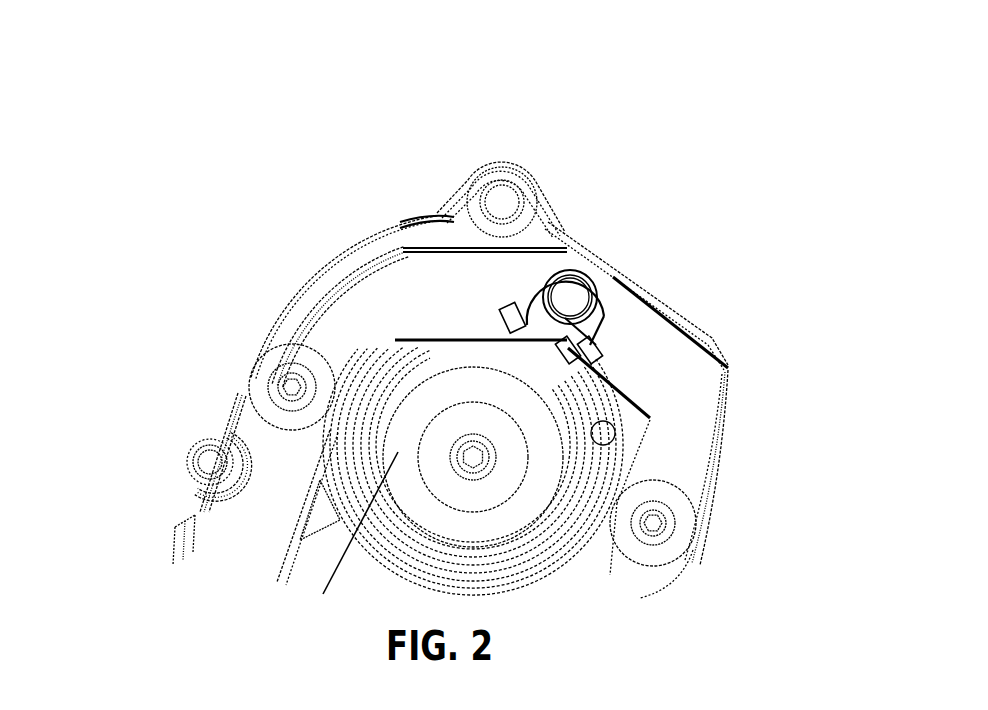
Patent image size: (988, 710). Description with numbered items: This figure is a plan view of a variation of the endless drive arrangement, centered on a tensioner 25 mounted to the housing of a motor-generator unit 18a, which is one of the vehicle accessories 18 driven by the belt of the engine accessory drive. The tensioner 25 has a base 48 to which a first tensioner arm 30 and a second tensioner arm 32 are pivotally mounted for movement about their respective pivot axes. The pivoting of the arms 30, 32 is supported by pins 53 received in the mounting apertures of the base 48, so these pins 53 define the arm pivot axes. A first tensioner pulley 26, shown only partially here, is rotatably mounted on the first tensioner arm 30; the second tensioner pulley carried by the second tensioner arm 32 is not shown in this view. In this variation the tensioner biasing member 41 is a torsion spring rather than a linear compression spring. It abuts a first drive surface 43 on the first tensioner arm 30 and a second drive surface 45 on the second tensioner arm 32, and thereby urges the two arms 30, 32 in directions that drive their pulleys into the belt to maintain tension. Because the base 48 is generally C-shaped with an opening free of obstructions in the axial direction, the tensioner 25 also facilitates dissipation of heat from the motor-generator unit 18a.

The tensioner 25 is at (362, 92).
The base 48 is at (370, 264).
The first tensioner arm 30 is at (350, 325).
The pins 53 is at (277, 372).
The vehicle accessories 18 is at (215, 488).
The motor-generator unit 18a is at (322, 463).
The first tensioner pulley 26 is at (173, 533).
The second tensioner arm 32 is at (670, 453).
The tensioner biasing member 41 is at (600, 272).
The first drive surface 43 is at (561, 305).
The second drive surface 45 is at (530, 312).